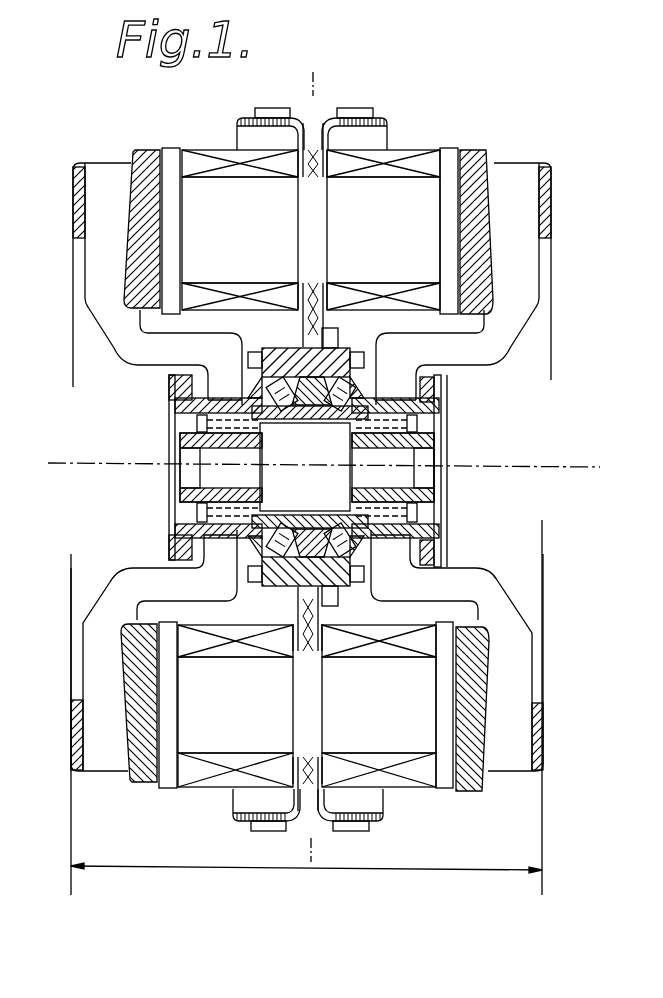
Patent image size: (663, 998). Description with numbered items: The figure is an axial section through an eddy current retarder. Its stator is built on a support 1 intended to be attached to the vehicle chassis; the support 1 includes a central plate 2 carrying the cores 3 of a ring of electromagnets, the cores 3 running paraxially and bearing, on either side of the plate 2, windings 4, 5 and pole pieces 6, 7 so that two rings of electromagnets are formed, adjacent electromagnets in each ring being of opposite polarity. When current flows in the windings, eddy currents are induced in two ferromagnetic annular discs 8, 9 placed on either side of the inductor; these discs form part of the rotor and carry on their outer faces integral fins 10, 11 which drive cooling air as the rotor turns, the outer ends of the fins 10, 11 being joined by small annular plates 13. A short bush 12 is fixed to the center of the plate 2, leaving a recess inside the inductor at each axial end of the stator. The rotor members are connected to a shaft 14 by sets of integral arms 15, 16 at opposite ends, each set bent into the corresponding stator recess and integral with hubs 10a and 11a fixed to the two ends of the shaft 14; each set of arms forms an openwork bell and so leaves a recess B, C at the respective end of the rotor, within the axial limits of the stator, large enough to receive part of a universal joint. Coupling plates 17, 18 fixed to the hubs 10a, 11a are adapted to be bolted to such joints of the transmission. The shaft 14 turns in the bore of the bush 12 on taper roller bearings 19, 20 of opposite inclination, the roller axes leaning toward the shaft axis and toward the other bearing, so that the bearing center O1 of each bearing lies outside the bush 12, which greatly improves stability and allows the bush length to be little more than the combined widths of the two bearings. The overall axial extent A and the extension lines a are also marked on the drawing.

The support 1 is at (370, 120).
The plate 2 is at (311, 123).
The cores 3 is at (222, 193).
The winding 4 is at (232, 155).
The winding 5 is at (398, 160).
The pole piece 6 is at (172, 172).
The pole piece 7 is at (450, 170).
The annular disc 8 is at (136, 166).
The annular disc 9 is at (491, 172).
The fins 10 is at (105, 268).
The fins 11 is at (515, 270).
The bush 12 is at (325, 353).
The annular plate 13 is at (546, 202).
The shaft 14 is at (318, 466).
The arms 15 is at (148, 355).
The arms 16 is at (465, 358).
The coupling plate 17 is at (195, 530).
The coupling plate 18 is at (418, 541).
The taper roller bearing 19 is at (279, 390).
The taper roller bearing 20 is at (350, 393).
The hub 10a is at (228, 419).
The hub 11a is at (418, 537).
The bearing center O1 is at (364, 462).
The overall length dimension A is at (306, 882).
The recess B is at (123, 489).
The recess C is at (460, 437).
The dimension extension a is at (70, 630).